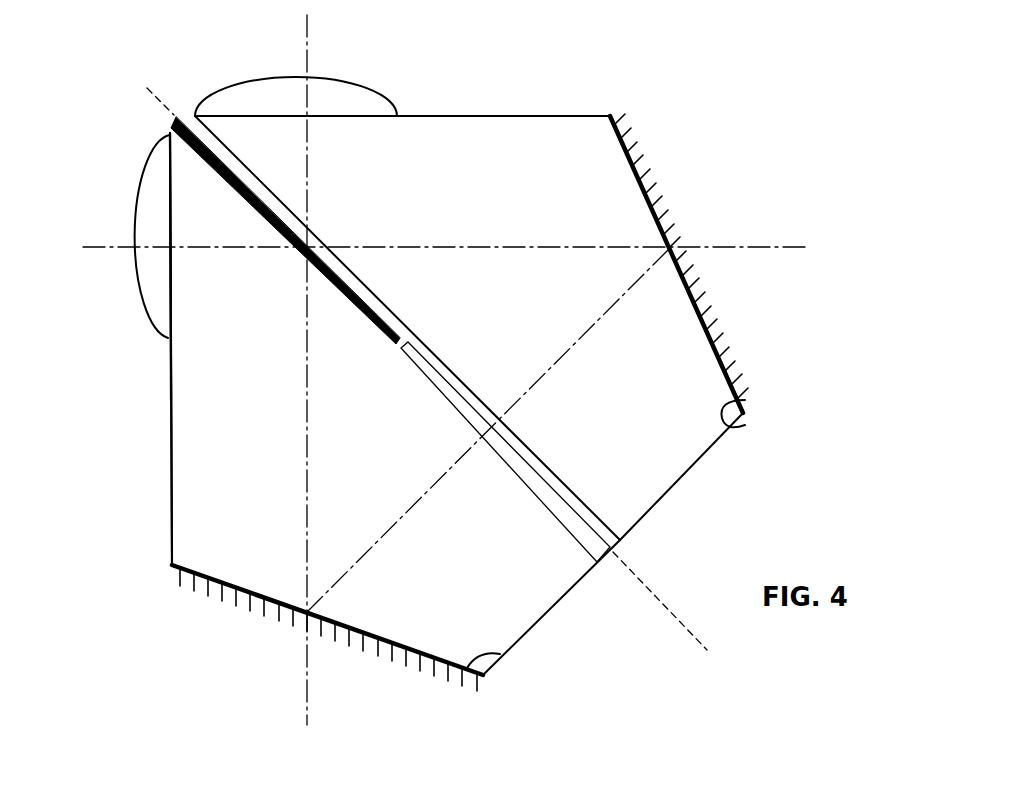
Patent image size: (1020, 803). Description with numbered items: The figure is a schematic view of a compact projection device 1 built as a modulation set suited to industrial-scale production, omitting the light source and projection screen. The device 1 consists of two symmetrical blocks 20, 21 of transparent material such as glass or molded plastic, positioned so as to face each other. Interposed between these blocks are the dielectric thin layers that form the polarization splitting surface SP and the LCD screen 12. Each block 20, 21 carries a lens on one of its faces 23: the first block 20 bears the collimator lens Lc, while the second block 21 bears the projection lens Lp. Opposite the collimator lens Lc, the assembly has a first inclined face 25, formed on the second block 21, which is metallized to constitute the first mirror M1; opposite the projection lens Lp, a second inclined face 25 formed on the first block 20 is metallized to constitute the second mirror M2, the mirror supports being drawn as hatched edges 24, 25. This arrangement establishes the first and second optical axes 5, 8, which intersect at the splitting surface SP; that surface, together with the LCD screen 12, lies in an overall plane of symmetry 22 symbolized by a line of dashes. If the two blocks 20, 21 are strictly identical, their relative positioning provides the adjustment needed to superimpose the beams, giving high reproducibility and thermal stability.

The projection device 1 is at (128, 547).
The first optical axis 5 is at (305, 58).
The second optical axis 8 is at (731, 247).
The LCD screen 12 is at (610, 547).
The first block 20 is at (515, 116).
The second block 21 is at (185, 478).
The plane of symmetry 22 is at (672, 617).
The face 23 is at (170, 415).
The bottom mirror support 24 is at (483, 678).
The inclined face 25 is at (735, 350).
The polarization splitting surface SP is at (186, 112).
The collimator lens Lc is at (360, 80).
The projection lens Lp is at (135, 183).
The first mirror M1 is at (500, 655).
The second mirror M2 is at (732, 432).